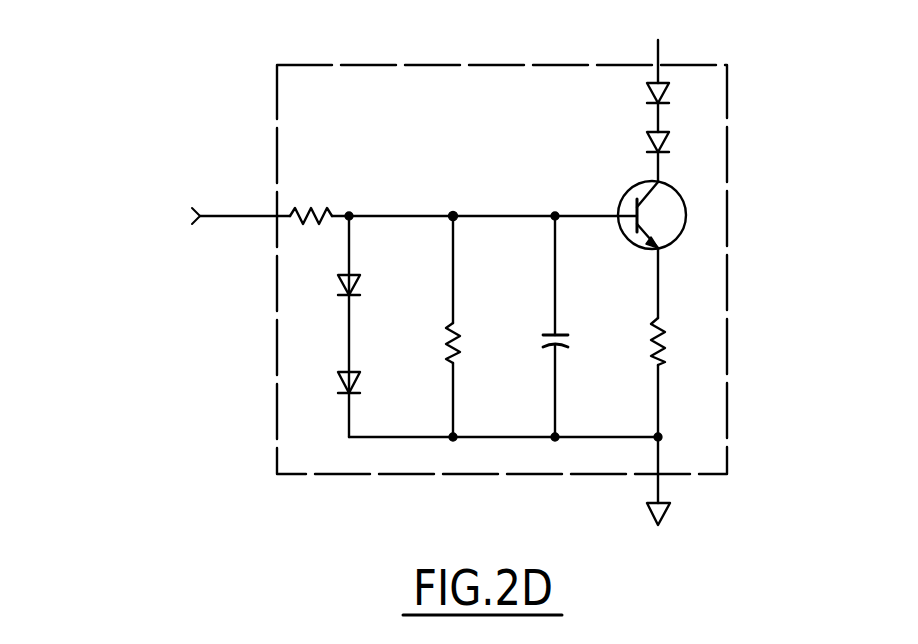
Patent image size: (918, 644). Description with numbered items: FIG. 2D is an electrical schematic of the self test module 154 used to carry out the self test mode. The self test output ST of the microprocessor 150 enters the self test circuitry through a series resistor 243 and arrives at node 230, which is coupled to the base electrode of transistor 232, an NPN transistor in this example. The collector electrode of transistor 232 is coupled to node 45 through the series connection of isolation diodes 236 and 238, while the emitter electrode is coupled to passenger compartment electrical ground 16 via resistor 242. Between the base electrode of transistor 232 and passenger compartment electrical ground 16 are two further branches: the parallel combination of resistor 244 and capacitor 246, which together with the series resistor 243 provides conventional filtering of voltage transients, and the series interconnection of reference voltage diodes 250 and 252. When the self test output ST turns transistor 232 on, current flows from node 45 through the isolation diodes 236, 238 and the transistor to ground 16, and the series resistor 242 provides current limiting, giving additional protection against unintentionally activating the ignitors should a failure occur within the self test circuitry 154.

The self test module 154 is at (432, 62).
The microprocessor 150 is at (120, 219).
The self test output ST is at (220, 215).
The series resistor 243 is at (322, 212).
The node 230 is at (462, 185).
The reference voltage diode 250 is at (357, 277).
The reference voltage diode 252 is at (358, 377).
The resistor 244 is at (460, 334).
The capacitor 246 is at (562, 334).
The node 45 is at (747, 51).
The isolation diode 236 is at (646, 93).
The isolation diode 238 is at (647, 141).
The transistor 232 is at (628, 190).
The resistor 242 is at (667, 326).
The passenger compartment electrical ground 16 is at (670, 510).